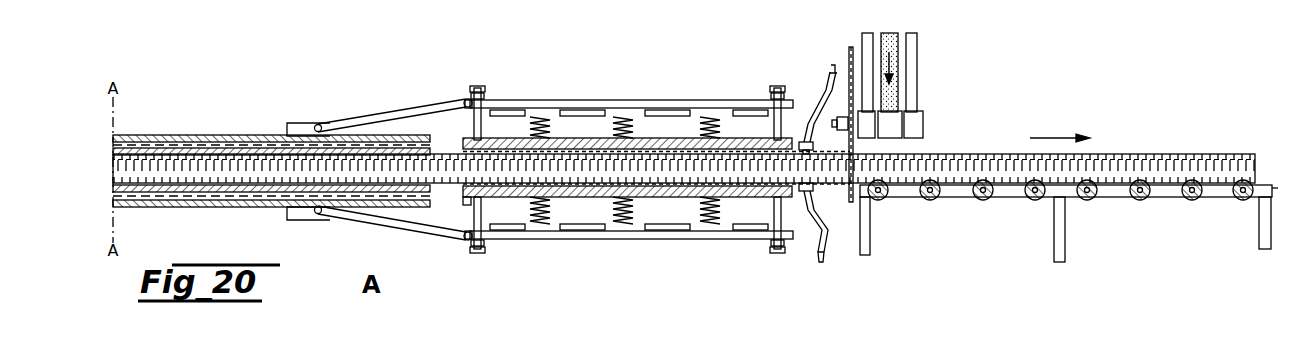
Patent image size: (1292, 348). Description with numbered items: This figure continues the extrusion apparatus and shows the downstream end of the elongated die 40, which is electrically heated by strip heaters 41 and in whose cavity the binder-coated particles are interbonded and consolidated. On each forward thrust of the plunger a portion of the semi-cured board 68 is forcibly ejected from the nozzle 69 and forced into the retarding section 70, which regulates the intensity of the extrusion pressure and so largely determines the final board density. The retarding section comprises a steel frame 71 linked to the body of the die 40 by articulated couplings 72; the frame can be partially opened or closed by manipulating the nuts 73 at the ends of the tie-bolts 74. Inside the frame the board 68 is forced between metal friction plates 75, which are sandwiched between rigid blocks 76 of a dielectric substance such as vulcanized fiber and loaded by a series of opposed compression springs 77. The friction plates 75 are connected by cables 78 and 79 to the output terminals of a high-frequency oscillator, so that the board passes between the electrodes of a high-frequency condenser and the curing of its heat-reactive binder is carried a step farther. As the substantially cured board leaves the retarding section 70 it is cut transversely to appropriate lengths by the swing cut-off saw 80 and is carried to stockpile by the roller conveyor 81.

The elongated die 40 is at (165, 134).
The strip heaters 41 is at (254, 114).
The semi-cured board 68 is at (180, 172).
The nozzle 69 is at (458, 135).
The retarding section 70 is at (610, 100).
The steel frame 71 is at (628, 240).
The articulated couplings 72 is at (375, 117).
The nuts 73 is at (485, 96).
The tie-bolts 74 is at (475, 209).
The metal friction plates 75 is at (463, 142).
The rigid blocks 76 is at (612, 128).
The compression springs 77 is at (530, 127).
The cable 78 is at (826, 100).
The cable 79 is at (818, 240).
The swing cut-off saw 80 is at (849, 54).
The roller conveyor 81 is at (1010, 198).